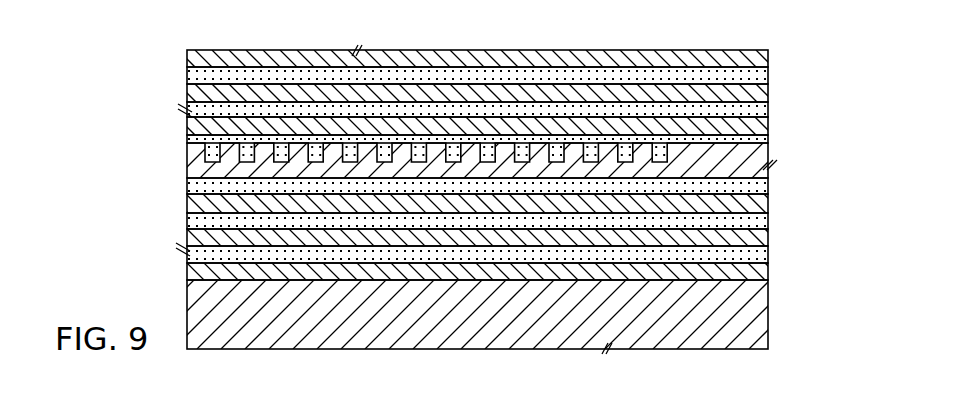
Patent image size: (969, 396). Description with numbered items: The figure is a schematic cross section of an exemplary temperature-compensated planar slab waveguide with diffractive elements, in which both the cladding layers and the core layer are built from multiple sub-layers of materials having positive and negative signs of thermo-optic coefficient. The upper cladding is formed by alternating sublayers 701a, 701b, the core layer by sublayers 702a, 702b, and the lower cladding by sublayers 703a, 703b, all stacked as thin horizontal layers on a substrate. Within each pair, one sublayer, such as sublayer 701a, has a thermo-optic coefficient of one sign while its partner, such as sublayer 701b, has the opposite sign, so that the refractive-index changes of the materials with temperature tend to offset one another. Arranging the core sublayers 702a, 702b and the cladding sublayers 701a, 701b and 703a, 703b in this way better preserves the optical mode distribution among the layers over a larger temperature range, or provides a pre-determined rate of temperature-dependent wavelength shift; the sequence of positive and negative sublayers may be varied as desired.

The cladding sublayer 701a is at (187, 128).
The cladding sublayer 701b is at (757, 74).
The core sublayer 702a is at (187, 164).
The core sublayer 702b is at (758, 185).
The cladding sublayer 703a is at (187, 203).
The cladding sublayer 703b is at (760, 220).